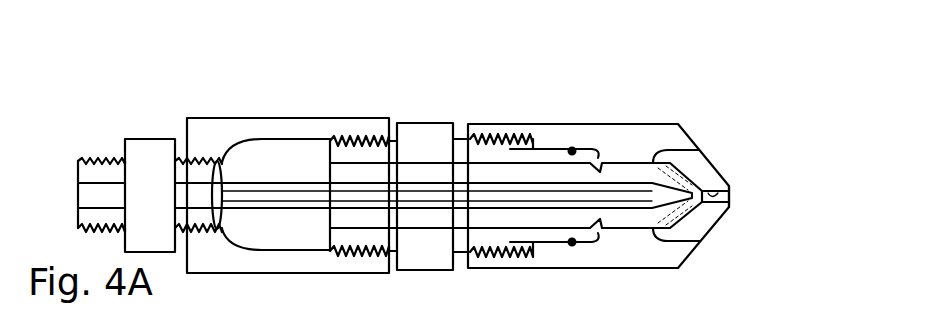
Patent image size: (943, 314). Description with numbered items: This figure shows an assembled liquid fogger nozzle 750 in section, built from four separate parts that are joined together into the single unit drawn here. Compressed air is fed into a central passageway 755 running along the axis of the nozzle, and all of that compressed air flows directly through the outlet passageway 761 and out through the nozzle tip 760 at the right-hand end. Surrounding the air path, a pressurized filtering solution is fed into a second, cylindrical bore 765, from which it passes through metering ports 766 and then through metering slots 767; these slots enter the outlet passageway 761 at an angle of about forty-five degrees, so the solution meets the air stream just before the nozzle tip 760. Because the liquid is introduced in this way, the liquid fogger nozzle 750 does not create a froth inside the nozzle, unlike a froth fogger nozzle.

The liquid fogger nozzle 750 is at (704, 72).
The central passageway 755 is at (498, 195).
The nozzle tip 760 is at (747, 208).
The outlet passageway 761 is at (723, 190).
The second, cylindrical bore 765 is at (482, 217).
The metering ports 766 is at (574, 150).
The metering slots 767 is at (690, 152).